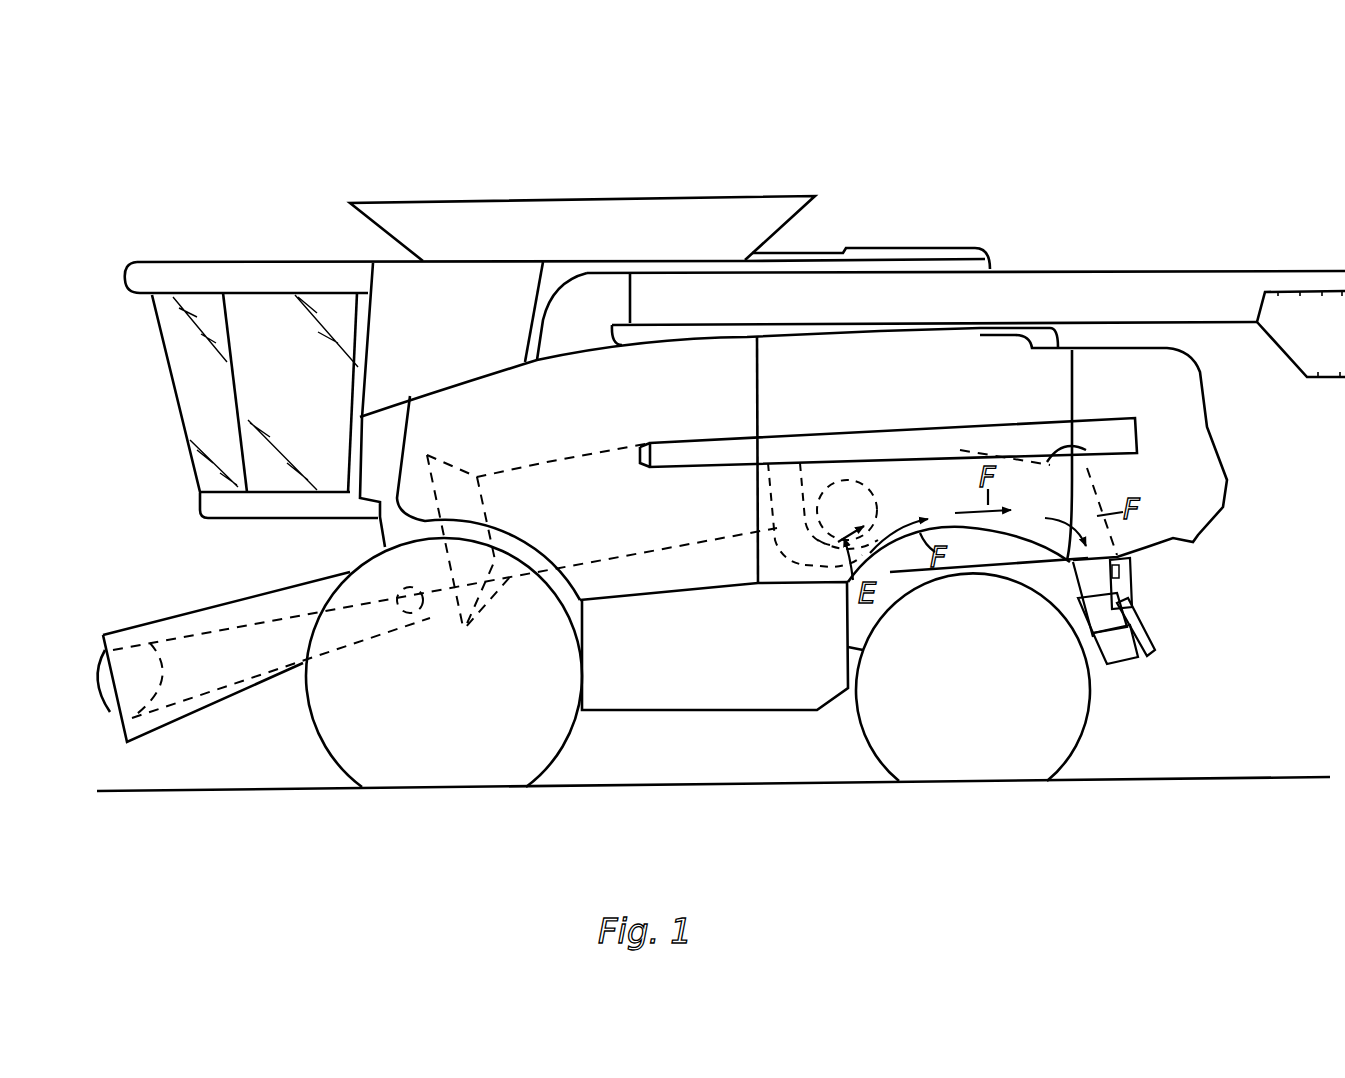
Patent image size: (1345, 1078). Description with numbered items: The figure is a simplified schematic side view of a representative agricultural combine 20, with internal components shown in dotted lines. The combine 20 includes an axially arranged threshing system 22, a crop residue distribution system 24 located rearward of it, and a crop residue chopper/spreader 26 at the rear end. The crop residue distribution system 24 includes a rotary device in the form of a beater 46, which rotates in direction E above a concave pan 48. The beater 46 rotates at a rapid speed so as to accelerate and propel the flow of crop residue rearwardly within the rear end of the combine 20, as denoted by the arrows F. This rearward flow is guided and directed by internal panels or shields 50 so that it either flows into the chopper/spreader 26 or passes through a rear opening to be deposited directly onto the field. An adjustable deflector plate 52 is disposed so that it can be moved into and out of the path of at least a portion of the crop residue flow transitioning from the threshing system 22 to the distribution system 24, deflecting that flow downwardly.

The agricultural combine 20 is at (1272, 150).
The axially arranged threshing system 22 is at (545, 459).
The crop residue distribution system 24 is at (865, 486).
The crop residue chopper/spreader 26 is at (1146, 664).
The beater 46 is at (868, 500).
The concave pan 48 is at (798, 564).
The shields 50 is at (1090, 487).
The adjustable deflector plate 52 is at (797, 476).